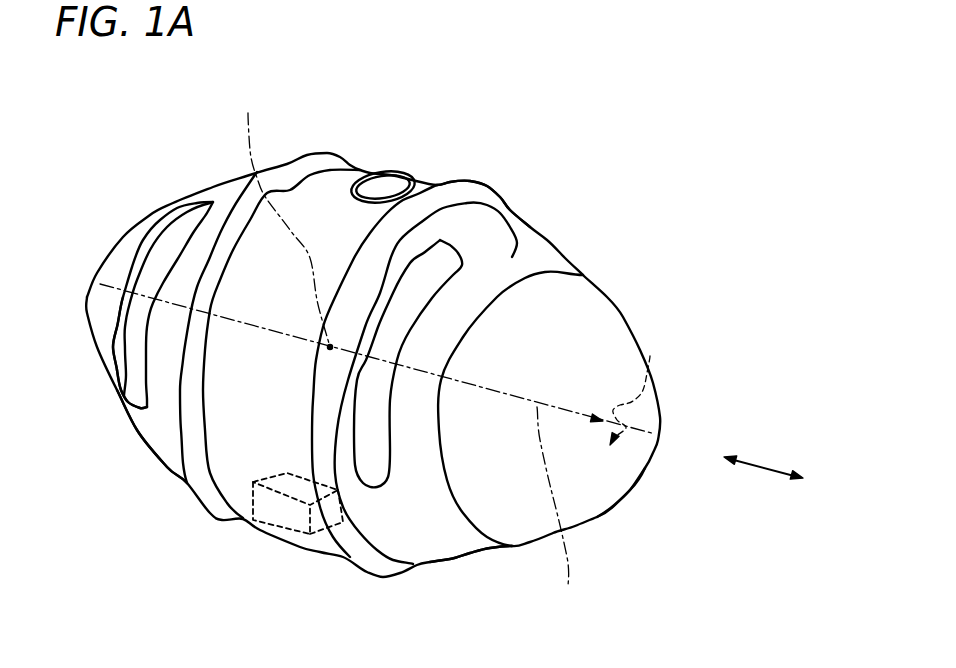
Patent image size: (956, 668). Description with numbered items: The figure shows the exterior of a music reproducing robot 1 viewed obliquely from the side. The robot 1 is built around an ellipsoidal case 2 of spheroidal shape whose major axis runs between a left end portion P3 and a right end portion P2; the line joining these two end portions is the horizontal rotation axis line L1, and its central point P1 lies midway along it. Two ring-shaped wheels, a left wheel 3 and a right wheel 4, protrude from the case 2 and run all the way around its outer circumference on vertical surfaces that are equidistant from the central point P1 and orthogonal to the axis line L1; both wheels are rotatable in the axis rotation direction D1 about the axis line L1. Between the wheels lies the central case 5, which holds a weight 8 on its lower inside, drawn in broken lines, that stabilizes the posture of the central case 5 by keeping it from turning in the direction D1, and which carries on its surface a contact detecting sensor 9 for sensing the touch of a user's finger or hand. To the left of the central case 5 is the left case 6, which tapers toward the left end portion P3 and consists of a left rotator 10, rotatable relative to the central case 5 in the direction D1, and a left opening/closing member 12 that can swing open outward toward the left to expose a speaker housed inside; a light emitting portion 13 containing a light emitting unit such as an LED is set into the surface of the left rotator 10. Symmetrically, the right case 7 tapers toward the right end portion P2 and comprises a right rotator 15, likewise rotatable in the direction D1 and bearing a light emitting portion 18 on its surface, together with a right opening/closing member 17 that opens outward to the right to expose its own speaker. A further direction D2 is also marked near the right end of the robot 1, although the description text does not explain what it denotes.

The music reproducing robot 1 is at (585, 119).
The ellipsoidal case 2 is at (612, 178).
The left wheel 3 is at (318, 153).
The right wheel 4 is at (470, 188).
The central case 5 is at (423, 179).
The left case 6 is at (202, 180).
The right case 7 is at (596, 255).
The weight 8 is at (289, 514).
The contact detecting sensor 9 is at (385, 181).
The left rotator 10 is at (160, 462).
The left opening/closing member 12 is at (106, 368).
The light emitting portion 13 is at (124, 410).
The right rotator 15 is at (463, 558).
The right opening/closing member 17 is at (636, 487).
The light emitting portion 18 is at (467, 263).
The central point P1 is at (284, 217).
The right end portion P2 is at (663, 430).
The left end portion P3 is at (98, 283).
The axis rotation direction D1 is at (650, 356).
The direction D2 is at (768, 458).
The horizontal rotation axis line L1 is at (561, 513).